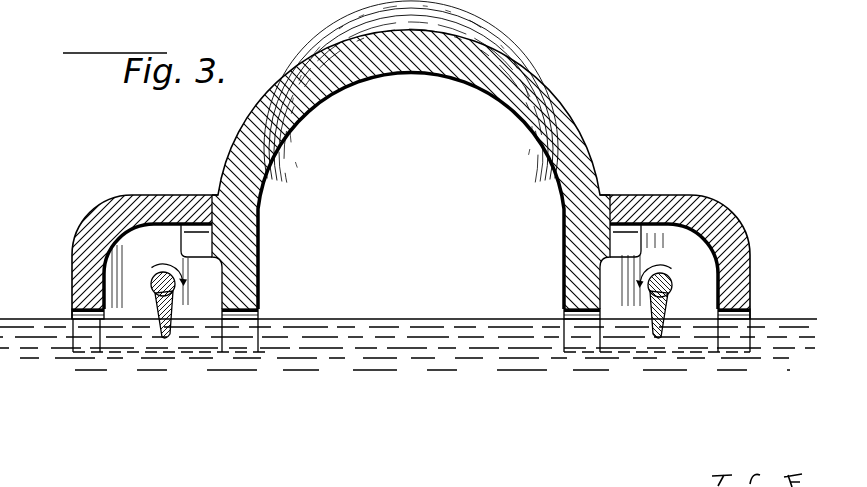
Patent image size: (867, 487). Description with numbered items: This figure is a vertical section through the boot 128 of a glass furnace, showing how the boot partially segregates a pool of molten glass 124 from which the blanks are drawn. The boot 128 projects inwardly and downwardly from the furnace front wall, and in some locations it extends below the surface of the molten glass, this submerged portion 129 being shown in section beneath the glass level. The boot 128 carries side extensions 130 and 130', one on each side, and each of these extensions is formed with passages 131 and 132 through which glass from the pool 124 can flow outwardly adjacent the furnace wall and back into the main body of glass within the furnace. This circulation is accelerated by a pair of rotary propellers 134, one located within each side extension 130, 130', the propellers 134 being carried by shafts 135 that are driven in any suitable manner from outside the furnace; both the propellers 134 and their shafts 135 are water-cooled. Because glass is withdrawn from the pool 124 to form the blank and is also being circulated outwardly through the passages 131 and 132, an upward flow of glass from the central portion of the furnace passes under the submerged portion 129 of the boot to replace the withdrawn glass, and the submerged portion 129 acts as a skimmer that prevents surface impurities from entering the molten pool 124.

The boot 128 is at (508, 30).
The side extension 130 is at (682, 244).
The side extension 130' is at (145, 244).
The passage 131 is at (258, 314).
The passage 132 is at (72, 312).
The rotary propeller 134 is at (157, 307).
The shaft 135 is at (155, 270).
The pool of molten glass 124 is at (472, 308).
The submerged portion of the boot 129 is at (273, 355).